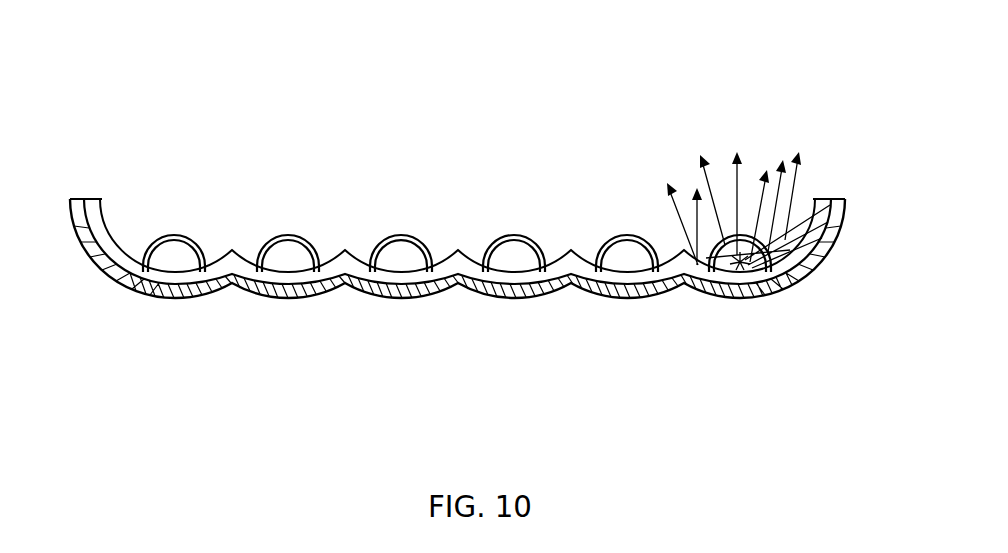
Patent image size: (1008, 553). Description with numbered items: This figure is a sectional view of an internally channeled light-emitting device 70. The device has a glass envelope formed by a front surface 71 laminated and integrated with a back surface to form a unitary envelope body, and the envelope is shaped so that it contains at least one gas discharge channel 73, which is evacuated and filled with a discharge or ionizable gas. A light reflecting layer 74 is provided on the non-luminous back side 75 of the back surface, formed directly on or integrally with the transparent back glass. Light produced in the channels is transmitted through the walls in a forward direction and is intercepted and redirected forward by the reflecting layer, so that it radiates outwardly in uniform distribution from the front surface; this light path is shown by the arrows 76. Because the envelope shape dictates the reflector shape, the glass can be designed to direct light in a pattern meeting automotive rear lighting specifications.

The internally channeled light-emitting device 70 is at (482, 250).
The front surface 71 is at (563, 257).
The gas discharge channel 73 is at (292, 258).
The light reflecting layer 74 is at (372, 298).
The non-luminous back side 75 is at (590, 300).
The arrows 76 is at (753, 153).